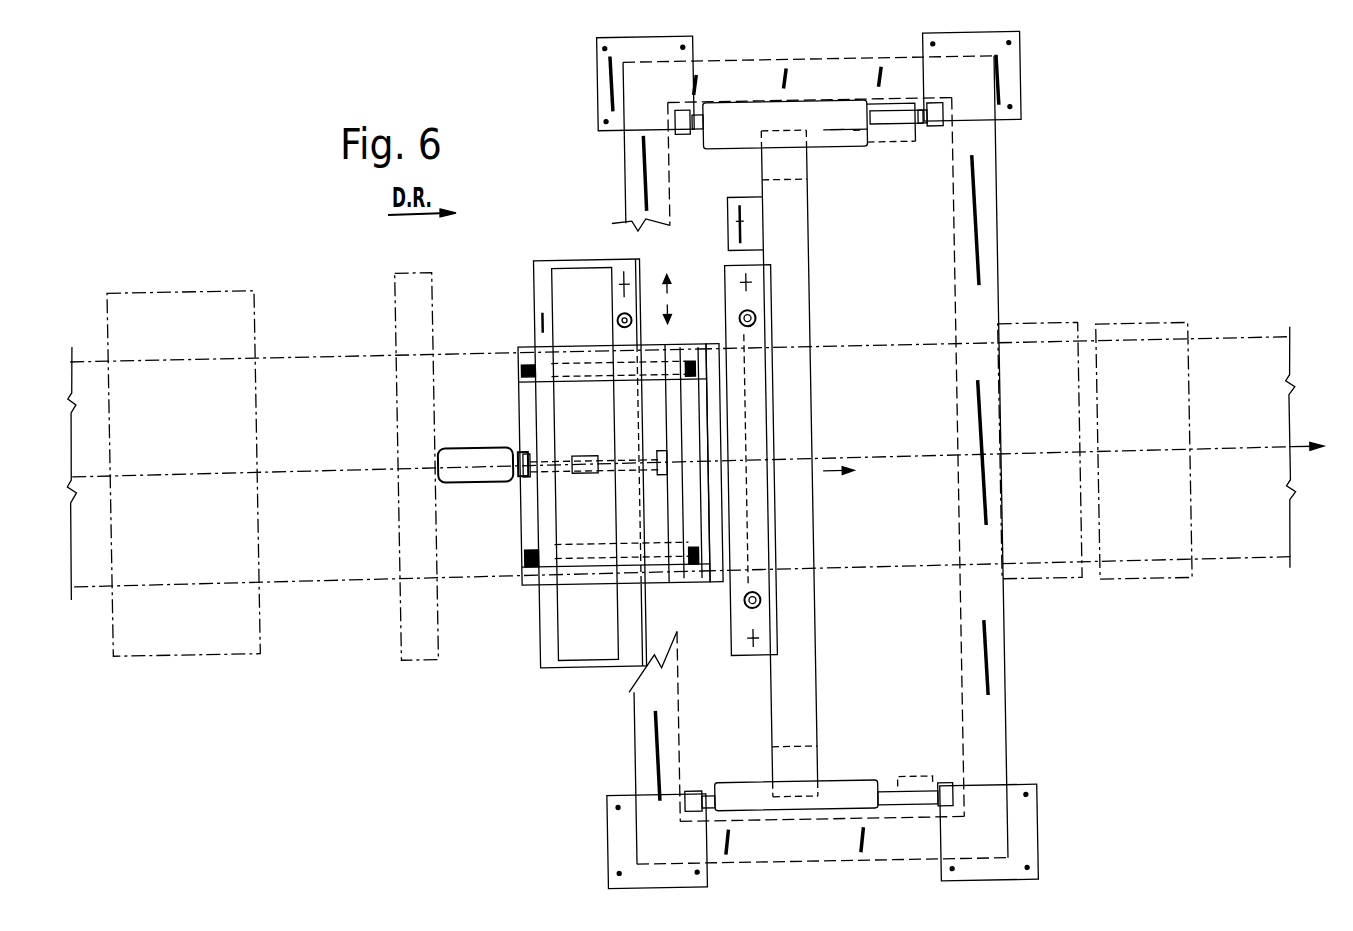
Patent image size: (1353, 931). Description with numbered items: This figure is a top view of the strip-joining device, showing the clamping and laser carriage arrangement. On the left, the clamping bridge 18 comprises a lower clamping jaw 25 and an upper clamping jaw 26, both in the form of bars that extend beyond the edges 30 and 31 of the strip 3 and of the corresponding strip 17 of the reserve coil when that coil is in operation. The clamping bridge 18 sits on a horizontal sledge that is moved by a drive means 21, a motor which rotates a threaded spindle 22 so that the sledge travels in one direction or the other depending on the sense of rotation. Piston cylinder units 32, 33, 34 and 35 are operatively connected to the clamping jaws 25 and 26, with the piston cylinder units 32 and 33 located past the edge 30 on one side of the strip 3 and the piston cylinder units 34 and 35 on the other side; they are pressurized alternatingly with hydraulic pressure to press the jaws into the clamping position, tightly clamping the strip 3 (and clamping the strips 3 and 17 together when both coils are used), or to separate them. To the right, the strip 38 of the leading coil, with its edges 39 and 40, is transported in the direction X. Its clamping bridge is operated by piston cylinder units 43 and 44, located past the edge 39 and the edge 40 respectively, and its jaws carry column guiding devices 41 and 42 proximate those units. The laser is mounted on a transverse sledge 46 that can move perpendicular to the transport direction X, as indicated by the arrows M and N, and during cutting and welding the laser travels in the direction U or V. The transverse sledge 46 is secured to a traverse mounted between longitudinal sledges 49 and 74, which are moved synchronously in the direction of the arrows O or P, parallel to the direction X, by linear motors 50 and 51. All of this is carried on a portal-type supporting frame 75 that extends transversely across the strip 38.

The strip 3 is at (276, 376).
The corresponding strip 17 is at (220, 472).
The clamping bridge 18 is at (527, 344).
The drive means 21 is at (457, 443).
The threaded spindle 22 is at (586, 454).
The lower clamping jaw 25 is at (646, 529).
The upper clamping jaw 26 is at (687, 516).
The edge of strip 30 is at (343, 349).
The edge of strip 31 is at (311, 574).
The piston cylinder unit 32 is at (620, 279).
The piston cylinder unit 33 is at (619, 318).
The piston cylinder unit 34 is at (612, 603).
The piston cylinder unit 35 is at (620, 641).
The strip 38 is at (862, 444).
The edge of strip 39 is at (912, 346).
The edge of strip 40 is at (887, 571).
The column guiding device 41 is at (760, 318).
The column guiding device 42 is at (768, 598).
The piston cylinder unit 43 is at (812, 271).
The piston cylinder unit 44 is at (775, 634).
The transverse sledge 46 is at (731, 217).
The longitudinal sledge 49 is at (842, 147).
The linear motor 50 is at (898, 122).
The linear motor 51 is at (901, 797).
The longitudinal sledge 74 is at (832, 792).
The portal-type supporting frame 75 is at (989, 278).
The direction arrow O is at (836, 132).
The direction arrow P is at (859, 133).
The direction arrow M is at (747, 216).
The direction arrow N is at (754, 239).
The direction arrow U is at (674, 283).
The direction arrow V is at (674, 313).
The direction of transport X is at (848, 470).